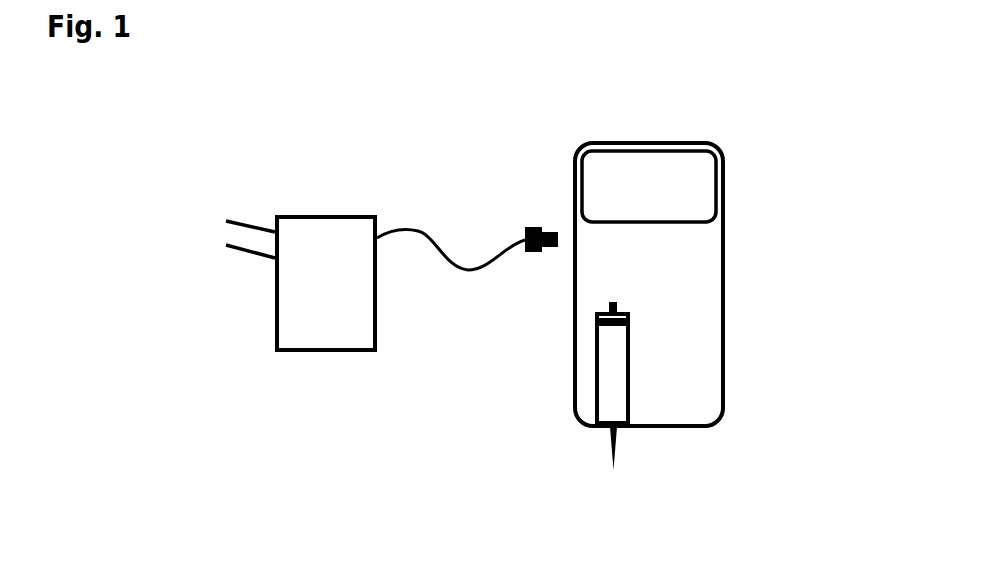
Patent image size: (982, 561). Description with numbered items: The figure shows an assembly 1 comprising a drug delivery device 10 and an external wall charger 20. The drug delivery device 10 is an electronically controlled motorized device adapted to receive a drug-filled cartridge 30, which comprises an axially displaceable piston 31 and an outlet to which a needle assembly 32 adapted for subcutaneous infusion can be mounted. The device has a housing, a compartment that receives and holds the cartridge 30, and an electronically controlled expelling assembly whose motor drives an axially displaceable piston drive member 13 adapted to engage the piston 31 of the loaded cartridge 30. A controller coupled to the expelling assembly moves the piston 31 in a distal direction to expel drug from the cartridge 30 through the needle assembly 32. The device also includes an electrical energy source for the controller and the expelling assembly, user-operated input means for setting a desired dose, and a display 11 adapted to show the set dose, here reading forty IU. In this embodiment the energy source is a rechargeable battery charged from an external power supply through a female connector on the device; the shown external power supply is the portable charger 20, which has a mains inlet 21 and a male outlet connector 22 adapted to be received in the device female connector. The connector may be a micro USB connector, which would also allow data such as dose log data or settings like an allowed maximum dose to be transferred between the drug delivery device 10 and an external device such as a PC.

The assembly 1 is at (322, 133).
The drug delivery device 10 is at (725, 304).
The display 11 is at (713, 195).
The piston drive member 13 is at (610, 308).
The external wall charger 20 is at (295, 353).
The mains inlet 21 is at (238, 250).
The male outlet connector 22 is at (531, 228).
The drug-filled cartridge 30 is at (597, 368).
The piston 31 is at (597, 323).
The needle assembly 32 is at (613, 433).